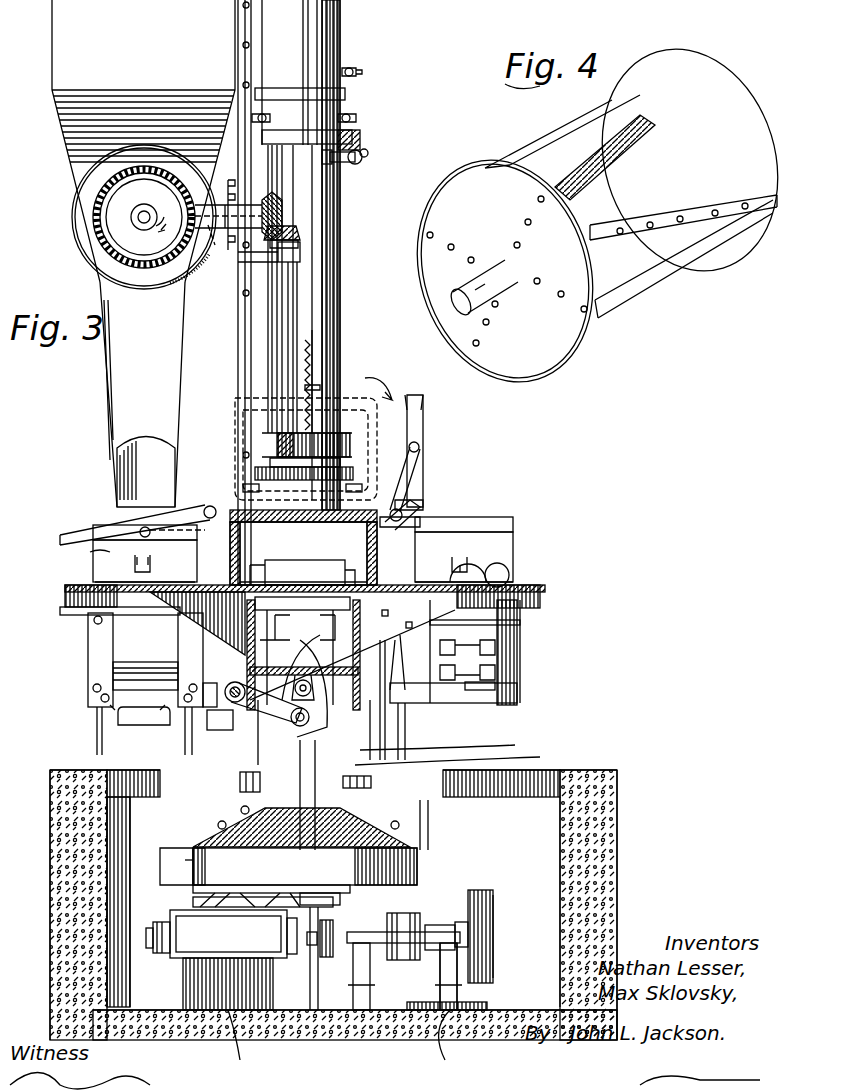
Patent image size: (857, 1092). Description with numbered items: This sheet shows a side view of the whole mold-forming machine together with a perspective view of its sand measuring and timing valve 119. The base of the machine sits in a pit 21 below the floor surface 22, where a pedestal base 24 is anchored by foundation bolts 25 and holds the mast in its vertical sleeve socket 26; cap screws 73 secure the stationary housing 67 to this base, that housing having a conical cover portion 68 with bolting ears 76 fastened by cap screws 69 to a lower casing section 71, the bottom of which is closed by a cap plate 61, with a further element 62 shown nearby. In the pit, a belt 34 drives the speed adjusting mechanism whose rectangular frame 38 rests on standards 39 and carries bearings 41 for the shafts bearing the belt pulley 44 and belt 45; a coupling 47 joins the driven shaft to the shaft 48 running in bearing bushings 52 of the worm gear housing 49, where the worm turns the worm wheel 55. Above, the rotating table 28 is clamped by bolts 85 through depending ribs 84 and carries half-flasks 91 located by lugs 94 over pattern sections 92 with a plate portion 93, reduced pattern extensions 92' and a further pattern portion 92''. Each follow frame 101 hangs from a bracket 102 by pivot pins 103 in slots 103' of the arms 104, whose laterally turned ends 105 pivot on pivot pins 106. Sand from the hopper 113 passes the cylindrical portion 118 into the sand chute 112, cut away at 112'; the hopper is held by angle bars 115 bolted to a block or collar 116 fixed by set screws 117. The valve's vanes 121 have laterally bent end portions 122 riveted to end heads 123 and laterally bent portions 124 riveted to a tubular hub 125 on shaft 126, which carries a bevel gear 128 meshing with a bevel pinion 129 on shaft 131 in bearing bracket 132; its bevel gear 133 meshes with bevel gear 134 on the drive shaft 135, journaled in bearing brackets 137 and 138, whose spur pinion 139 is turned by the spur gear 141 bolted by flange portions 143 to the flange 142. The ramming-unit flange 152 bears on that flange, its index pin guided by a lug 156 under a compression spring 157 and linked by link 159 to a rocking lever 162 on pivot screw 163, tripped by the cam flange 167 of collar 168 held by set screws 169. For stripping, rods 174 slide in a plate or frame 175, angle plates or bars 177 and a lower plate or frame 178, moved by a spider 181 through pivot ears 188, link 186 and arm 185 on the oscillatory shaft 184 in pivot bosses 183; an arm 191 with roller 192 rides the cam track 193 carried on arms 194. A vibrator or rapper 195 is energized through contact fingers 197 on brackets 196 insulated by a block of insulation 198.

In FIG. 3, the pit 21 is at (590, 850).
In FIG. 3, the floor surface 22 is at (590, 768).
In FIG. 3, the pedestal base 24 is at (487, 1003).
In FIG. 3, the foundation bolts 25 is at (372, 990).
In FIG. 3, the vertical sleeve socket 26 is at (320, 895).
In FIG. 3, the rotating table 28 is at (540, 588).
In FIG. 3, the belt 34 is at (484, 890).
In FIG. 3, the rectangular frame 38 is at (445, 925).
In FIG. 3, the standards 39 is at (435, 1043).
In FIG. 3, the bearings 41 is at (505, 907).
In FIG. 3, the belt pulley 44 is at (450, 905).
In FIG. 3, the belt 45 is at (406, 923).
In FIG. 3, the coupling 47 is at (355, 922).
In FIG. 3, the shaft 48 is at (241, 984).
In FIG. 3, the worm gear housing 49 is at (185, 922).
In FIG. 3, the bearing bushings 52 is at (170, 945).
In FIG. 3, the worm wheel 55 is at (494, 900).
In FIG. 3, the cap plate 61 is at (251, 1043).
In FIG. 3, the brace 62 is at (195, 905).
In FIG. 3, the stationary housing 67 is at (193, 852).
In FIG. 3, the conical cover portion 68 is at (271, 879).
In FIG. 3, the cap screws 69 is at (420, 855).
In FIG. 3, the lower casing section 71 is at (179, 858).
In FIG. 3, the cap screws 73 is at (295, 893).
In FIG. 3, the bolting ears 76 is at (240, 812).
In FIG. 3, the depending ribs 84 is at (396, 700).
In FIG. 3, the bolts 85 is at (400, 617).
In FIG. 3, the half-flasks 91 is at (92, 556).
In FIG. 3, the pattern sections 92 is at (375, 561).
In FIG. 3, the reduced pattern extensions 92' is at (265, 561).
In FIG. 3, the roller flange 92'' is at (351, 561).
In FIG. 3, the plate portion 93 is at (92, 580).
In FIG. 3, the lugs 94 is at (135, 566).
In FIG. 3, the follow frame 101 is at (80, 529).
In FIG. 3, the bracket 102 is at (400, 508).
In FIG. 3, the pivot pins 103 is at (291, 479).
In FIG. 3, the slots 103' is at (432, 458).
In FIG. 3, the arms 104 is at (140, 525).
In FIG. 3, the laterally turned ends 105 is at (425, 505).
In FIG. 3, the pivot pins 106 is at (422, 522).
In FIG. 3, the sand chute 112 is at (117, 394).
In FIG. 3, the cut-away wall 112' is at (112, 472).
In FIG. 3, the hopper 113 is at (60, 70).
In FIG. 3, the angle bars 115 is at (240, 65).
In FIG. 3, the block or collar 116 is at (343, 46).
In FIG. 3, the set screws 117 is at (362, 72).
In FIG. 3, the cylindrical portion 118 is at (78, 190).
In FIG. 4, the sand measuring and timing valve 119 is at (558, 134).
In FIG. 4, the vanes 121 is at (665, 115).
In FIG. 4, the laterally bent end portions 122 is at (700, 78).
In FIG. 4, the end heads 123 is at (735, 95).
In FIG. 4, the laterally bent portions 124 is at (660, 215).
In FIG. 4, the tubular hub 125 is at (580, 235).
In FIG. 3, the shaft 126 is at (136, 222).
In FIG. 4, the shaft 126 is at (457, 302).
In FIG. 3, the bevel gear 128 is at (110, 250).
In FIG. 3, the bevel pinion 129 is at (190, 205).
In FIG. 3, the shaft 131 is at (222, 255).
In FIG. 3, the bearing bracket 132 is at (268, 205).
In FIG. 3, the bevel gear 133 is at (280, 225).
In FIG. 3, the bevel gear 134 is at (298, 232).
In FIG. 3, the drive shaft 135 is at (299, 280).
In FIG. 3, the bearing bracket 137 is at (300, 252).
In FIG. 3, the bearing bracket 138 is at (320, 350).
In FIG. 3, the spur pinion 139 is at (255, 472).
In FIG. 3, the spur gear 141 is at (253, 490).
In FIG. 3, the flange 142 is at (352, 440).
In FIG. 3, the flange portions 143 is at (360, 490).
In FIG. 3, the flange 152 is at (423, 400).
In FIG. 3, the lug 156 is at (290, 433).
In FIG. 3, the compression spring 157 is at (330, 425).
In FIG. 3, the link 159 is at (340, 293).
In FIG. 3, the rocking lever 162 is at (348, 166).
In FIG. 3, the pivot screw 163 is at (365, 155).
In FIG. 3, the cam flange 167 is at (360, 140).
In FIG. 3, the collar 168 is at (350, 134).
In FIG. 3, the set screws 169 is at (270, 112).
In FIG. 3, the rods 174 is at (97, 752).
In FIG. 3, the plate or frame 175 is at (95, 612).
In FIG. 3, the angle plates or bars 177 is at (88, 650).
In FIG. 3, the plate or frame 178 is at (105, 708).
In FIG. 3, the spider 181 is at (113, 668).
In FIG. 3, the pivot bosses 183 is at (500, 705).
In FIG. 3, the oscillatory shaft 184 is at (237, 683).
In FIG. 3, the arm 185 is at (120, 712).
In FIG. 3, the link 186 is at (600, 652).
In FIG. 3, the pivot ears 188 is at (400, 695).
In FIG. 3, the arm 191 is at (205, 705).
In FIG. 3, the roller 192 is at (215, 730).
In FIG. 3, the cam track 193 is at (367, 730).
In FIG. 3, the arms 194 is at (430, 818).
In FIG. 3, the vibrator or rapper 195 is at (510, 570).
In FIG. 3, the brackets 196 is at (378, 795).
In FIG. 3, the contact fingers 197 is at (240, 785).
In FIG. 3, the block of insulation 198 is at (448, 744).